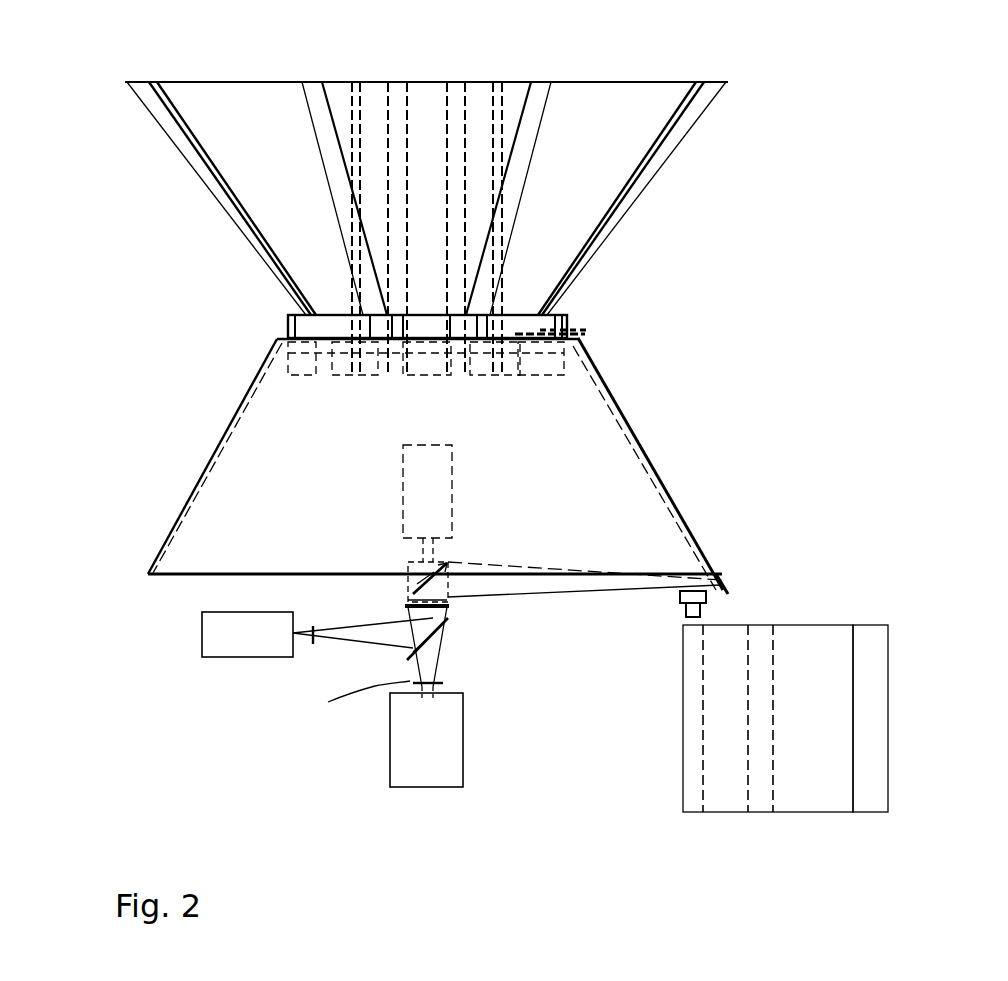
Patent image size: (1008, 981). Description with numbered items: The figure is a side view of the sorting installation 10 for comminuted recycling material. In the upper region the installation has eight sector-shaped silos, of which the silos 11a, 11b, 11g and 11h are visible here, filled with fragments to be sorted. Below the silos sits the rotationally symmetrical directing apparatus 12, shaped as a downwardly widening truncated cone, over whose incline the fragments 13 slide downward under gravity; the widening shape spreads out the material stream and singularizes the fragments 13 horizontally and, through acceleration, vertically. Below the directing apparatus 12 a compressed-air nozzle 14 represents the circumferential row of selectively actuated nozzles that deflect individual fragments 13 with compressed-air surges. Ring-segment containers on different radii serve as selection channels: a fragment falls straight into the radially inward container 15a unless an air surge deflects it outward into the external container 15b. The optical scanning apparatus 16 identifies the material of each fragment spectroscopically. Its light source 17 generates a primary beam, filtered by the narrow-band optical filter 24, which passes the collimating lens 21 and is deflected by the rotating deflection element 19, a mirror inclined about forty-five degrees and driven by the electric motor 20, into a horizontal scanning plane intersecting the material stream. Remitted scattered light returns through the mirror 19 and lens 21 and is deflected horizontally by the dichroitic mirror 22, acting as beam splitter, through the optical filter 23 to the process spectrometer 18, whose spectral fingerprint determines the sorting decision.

The sorting installation 10 is at (774, 292).
The sector-shaped silo 11a is at (584, 97).
The sector-shaped silo 11b is at (712, 92).
The sector-shaped silo 11g is at (150, 95).
The sector-shaped silo 11h is at (250, 97).
The directing apparatus 12 is at (216, 447).
The fragments 13 is at (712, 565).
The compressed-air nozzle 14 is at (683, 608).
The radially inward container 15a is at (720, 804).
The external container 15b is at (832, 804).
The optical scanning apparatus 16 is at (275, 778).
The light source 17 is at (456, 745).
The process spectrometer 18 is at (200, 637).
The rotating deflection element 19 is at (410, 578).
The electric motor 20 is at (439, 478).
The collimating lens 21 is at (447, 608).
The dichroitic mirror 22 is at (440, 645).
The optical filter 23 is at (313, 644).
The narrow-band optical filter 24 is at (346, 718).